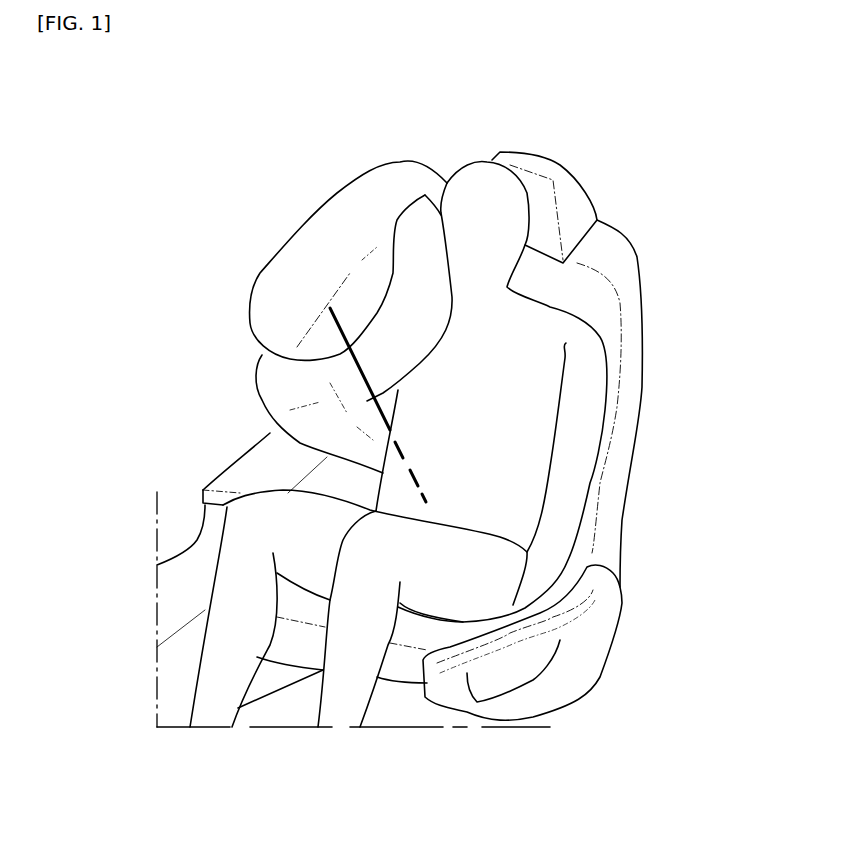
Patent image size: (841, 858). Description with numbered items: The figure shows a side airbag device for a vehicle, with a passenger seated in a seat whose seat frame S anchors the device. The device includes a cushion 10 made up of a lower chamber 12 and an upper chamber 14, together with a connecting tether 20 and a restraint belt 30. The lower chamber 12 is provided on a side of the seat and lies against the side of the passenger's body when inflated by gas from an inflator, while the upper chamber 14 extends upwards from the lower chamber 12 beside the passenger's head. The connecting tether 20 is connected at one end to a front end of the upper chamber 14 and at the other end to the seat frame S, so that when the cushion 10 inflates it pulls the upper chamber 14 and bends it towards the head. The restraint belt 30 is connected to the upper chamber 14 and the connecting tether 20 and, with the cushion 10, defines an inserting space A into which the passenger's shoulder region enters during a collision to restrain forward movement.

The cushion 10 is at (309, 275).
The lower chamber 12 is at (277, 388).
The upper chamber 14 is at (298, 270).
The inserting space A is at (375, 277).
The connecting tether 20 is at (400, 462).
The restraint belt 30 is at (417, 310).
The seat frame S is at (466, 436).